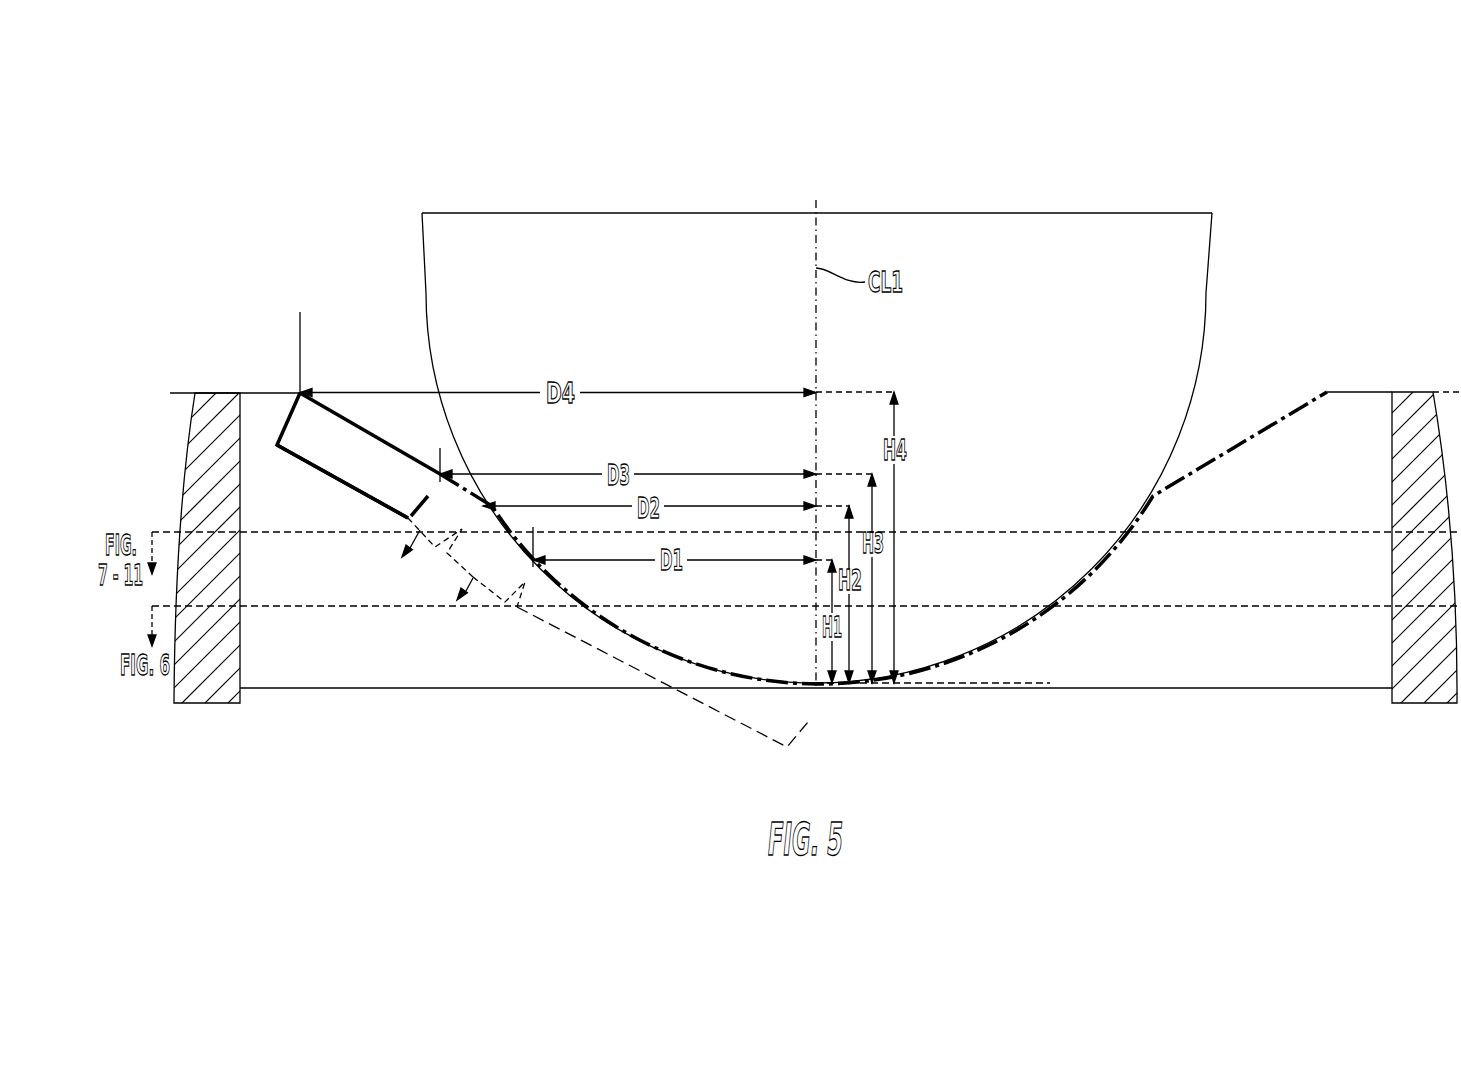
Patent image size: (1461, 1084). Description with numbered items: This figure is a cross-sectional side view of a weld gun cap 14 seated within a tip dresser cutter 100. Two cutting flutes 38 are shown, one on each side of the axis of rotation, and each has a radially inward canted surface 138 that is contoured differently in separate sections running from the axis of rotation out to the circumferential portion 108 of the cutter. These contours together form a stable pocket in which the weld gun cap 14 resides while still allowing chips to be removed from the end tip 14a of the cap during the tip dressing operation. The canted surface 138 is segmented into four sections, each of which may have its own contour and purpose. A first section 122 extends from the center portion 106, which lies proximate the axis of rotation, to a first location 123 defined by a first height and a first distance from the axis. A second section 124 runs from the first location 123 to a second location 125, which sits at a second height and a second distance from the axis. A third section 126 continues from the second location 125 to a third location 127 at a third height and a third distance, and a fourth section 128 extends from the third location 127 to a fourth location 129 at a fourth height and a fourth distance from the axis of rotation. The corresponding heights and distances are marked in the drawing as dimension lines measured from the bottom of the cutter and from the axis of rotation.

The weld gun cap 14 is at (790, 235).
The end tip 14a is at (801, 655).
The cutting flute 38 is at (386, 684).
The tip dresser cutter 100 is at (184, 362).
The center portion 106 is at (818, 690).
The circumferential portion 108 is at (203, 704).
The first section 122 is at (654, 684).
The first location 123 is at (536, 553).
The second section 124 is at (480, 609).
The second location 125 is at (487, 500).
The third section 126 is at (420, 558).
The third location 127 is at (437, 473).
The fourth section 128 is at (343, 483).
The fourth location 129 is at (292, 397).
The radially inward canted surface 138 is at (398, 444).